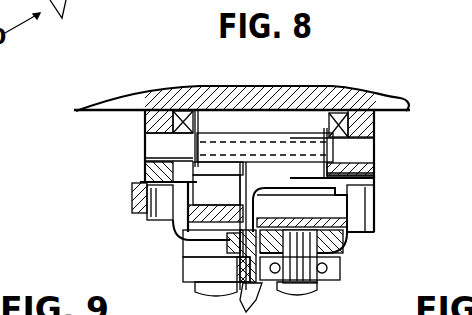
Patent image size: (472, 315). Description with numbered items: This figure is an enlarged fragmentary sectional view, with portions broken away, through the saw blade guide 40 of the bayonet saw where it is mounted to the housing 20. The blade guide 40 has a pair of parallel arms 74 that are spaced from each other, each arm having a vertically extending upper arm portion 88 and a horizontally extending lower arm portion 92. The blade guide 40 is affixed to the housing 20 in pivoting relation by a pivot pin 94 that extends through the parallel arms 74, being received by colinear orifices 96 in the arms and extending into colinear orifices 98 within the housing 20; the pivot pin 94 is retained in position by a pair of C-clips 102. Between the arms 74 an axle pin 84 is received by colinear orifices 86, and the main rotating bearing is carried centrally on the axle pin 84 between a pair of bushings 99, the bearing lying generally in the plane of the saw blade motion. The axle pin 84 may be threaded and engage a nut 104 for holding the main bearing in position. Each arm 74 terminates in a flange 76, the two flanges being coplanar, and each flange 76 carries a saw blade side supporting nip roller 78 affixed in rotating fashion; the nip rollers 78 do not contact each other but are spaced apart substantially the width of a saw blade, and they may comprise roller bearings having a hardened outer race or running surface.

The housing 20 is at (82, 110).
The saw blade guide 40 is at (121, 223).
The parallel arms 74 is at (182, 111).
The flange 76 is at (207, 245).
The nip roller 78 is at (188, 278).
The axle pin 84 is at (358, 200).
The colinear orifices 86 is at (376, 213).
The upper arm portion 88 is at (147, 173).
The lower arm portion 92 is at (180, 222).
The pivot pin 94 is at (222, 183).
The colinear orifices 96 is at (160, 136).
The colinear orifices 98 is at (147, 153).
The bushings 99 is at (243, 205).
The C-clips 102 is at (195, 170).
The nut 104 is at (147, 202).